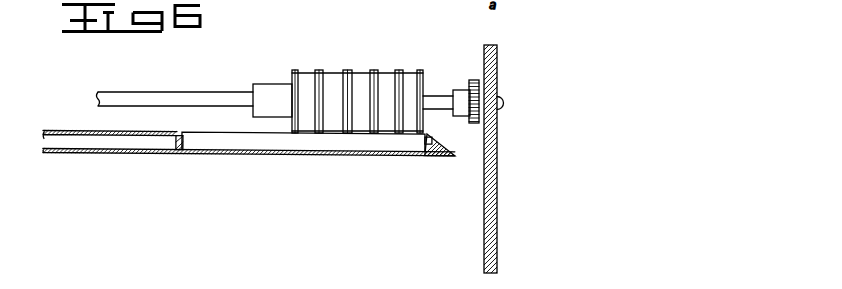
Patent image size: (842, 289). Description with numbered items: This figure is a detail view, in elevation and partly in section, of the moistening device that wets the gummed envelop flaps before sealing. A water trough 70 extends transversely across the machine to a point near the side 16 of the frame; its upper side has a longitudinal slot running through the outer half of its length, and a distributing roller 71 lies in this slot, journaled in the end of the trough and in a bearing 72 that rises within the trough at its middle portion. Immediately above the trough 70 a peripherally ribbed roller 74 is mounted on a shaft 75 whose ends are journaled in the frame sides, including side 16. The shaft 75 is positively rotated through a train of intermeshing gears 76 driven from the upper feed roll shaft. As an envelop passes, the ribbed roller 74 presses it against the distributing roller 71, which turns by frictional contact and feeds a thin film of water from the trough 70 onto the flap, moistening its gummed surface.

The side of the frame 16 is at (493, 156).
The water trough 70 is at (95, 148).
The distributing roller 71 is at (253, 143).
The bearing 72 is at (173, 148).
The peripherally ribbed roller 74 is at (367, 77).
The shaft 75 is at (221, 96).
The train of intermeshing gears 76 is at (480, 89).